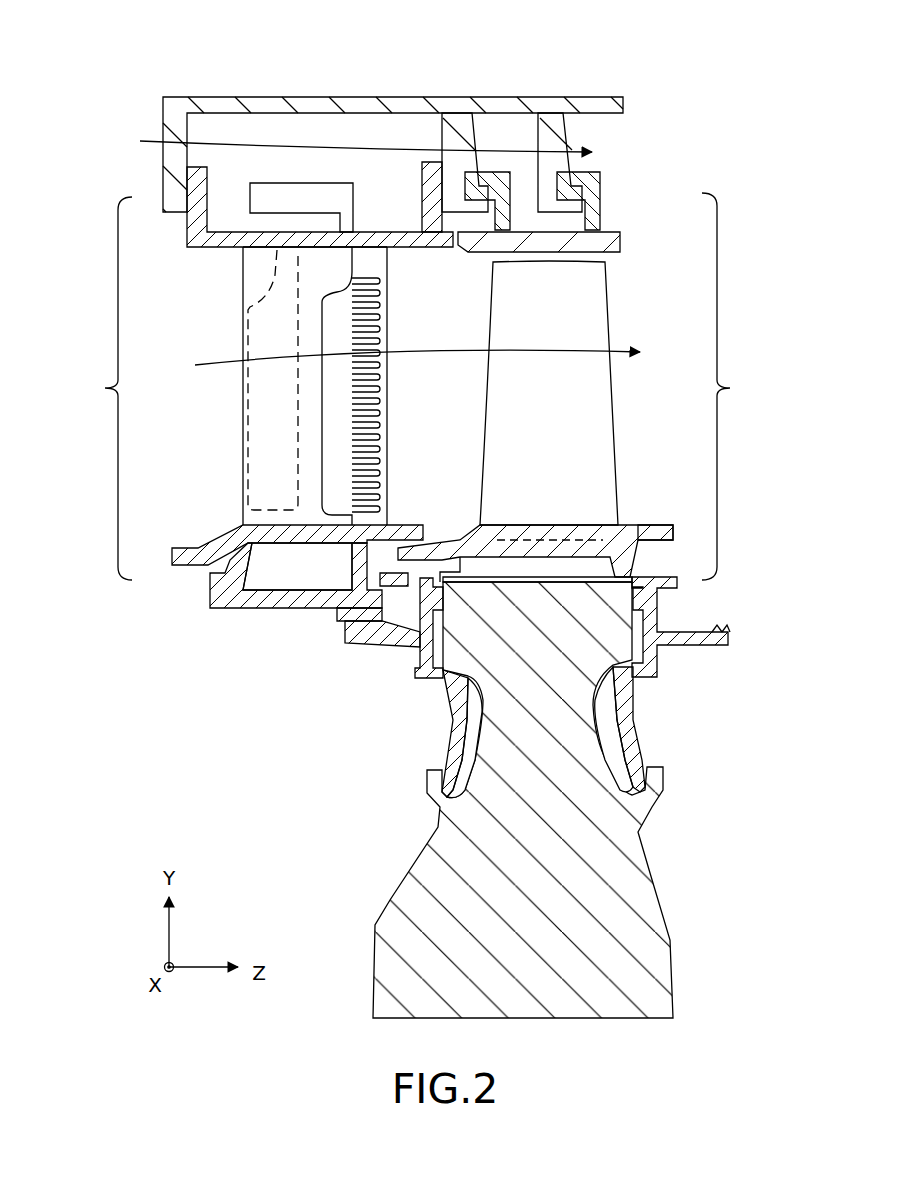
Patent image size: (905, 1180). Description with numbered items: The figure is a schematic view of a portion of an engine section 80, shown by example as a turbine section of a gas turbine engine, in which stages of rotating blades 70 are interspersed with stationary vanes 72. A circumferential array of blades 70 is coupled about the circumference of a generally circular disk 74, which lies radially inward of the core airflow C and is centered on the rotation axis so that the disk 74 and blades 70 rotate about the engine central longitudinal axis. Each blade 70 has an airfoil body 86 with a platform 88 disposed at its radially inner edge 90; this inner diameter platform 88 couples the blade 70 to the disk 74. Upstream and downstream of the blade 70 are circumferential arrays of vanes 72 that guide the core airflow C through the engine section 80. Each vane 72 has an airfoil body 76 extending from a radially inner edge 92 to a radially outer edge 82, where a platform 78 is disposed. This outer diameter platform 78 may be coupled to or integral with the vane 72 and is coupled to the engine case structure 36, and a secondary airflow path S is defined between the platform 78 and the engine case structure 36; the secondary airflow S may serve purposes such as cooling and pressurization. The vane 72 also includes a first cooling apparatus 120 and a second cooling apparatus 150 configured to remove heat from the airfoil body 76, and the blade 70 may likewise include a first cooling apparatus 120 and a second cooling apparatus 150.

The engine case structure 36 is at (277, 105).
The blade 70 is at (739, 386).
The vane 72 is at (96, 388).
The disk 74 is at (638, 902).
The airfoil body 76 is at (313, 386).
The platform 78 is at (210, 240).
The engine section 80 is at (109, 84).
The radially outer edge 82 is at (262, 247).
The airfoil body 86 is at (597, 400).
The platform 88 is at (628, 548).
The radially inner edge 90 is at (537, 525).
The radially inner edge 92 is at (302, 527).
The first cooling apparatus 120 is at (345, 483).
The second cooling apparatus 150 is at (268, 477).
The secondary airflow path S is at (387, 148).
The core airflow C is at (417, 351).